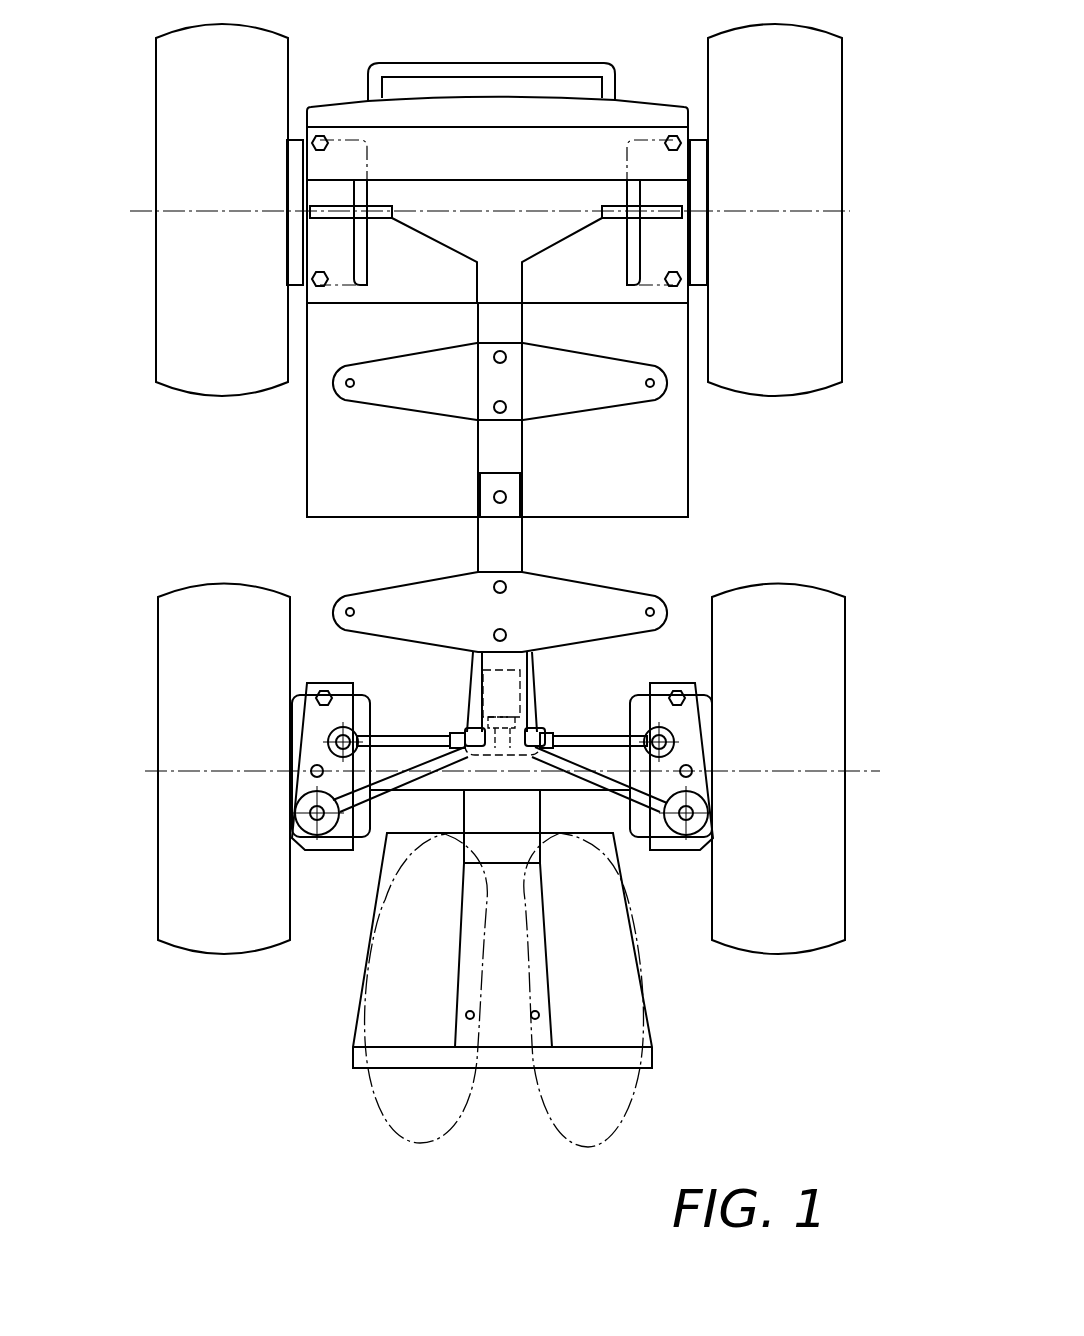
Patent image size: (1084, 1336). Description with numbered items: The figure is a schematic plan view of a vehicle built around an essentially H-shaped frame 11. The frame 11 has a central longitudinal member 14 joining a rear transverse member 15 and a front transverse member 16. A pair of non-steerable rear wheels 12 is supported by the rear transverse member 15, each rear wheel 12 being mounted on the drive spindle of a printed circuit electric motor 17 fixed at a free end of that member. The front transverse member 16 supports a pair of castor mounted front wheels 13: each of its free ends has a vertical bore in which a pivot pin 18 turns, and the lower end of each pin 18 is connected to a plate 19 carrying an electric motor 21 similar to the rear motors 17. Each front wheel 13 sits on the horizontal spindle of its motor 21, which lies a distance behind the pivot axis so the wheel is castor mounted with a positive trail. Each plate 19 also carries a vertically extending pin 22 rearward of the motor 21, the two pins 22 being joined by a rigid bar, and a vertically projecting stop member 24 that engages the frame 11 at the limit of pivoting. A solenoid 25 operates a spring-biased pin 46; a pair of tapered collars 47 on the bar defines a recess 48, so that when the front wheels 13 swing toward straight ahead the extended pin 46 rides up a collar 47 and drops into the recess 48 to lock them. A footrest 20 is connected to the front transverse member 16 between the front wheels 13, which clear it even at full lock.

The frame 11 is at (616, 567).
The rear wheels 12 is at (172, 259).
The front wheels 13 is at (205, 940).
The central longitudinal member 14 is at (490, 542).
The rear transverse member 15 is at (447, 228).
The front transverse member 16 is at (423, 782).
The printed circuit electric motor 17 is at (362, 262).
The pivot pin 18 is at (308, 828).
The plate 19 is at (322, 680).
The footrest 20 is at (350, 1063).
The electric motor 21 is at (362, 718).
The pin 22 is at (335, 740).
The stop member 24 is at (313, 768).
The solenoid 25 is at (505, 700).
The pin 46 is at (518, 710).
The tapered collars 47 is at (470, 732).
The recess 48 is at (505, 757).